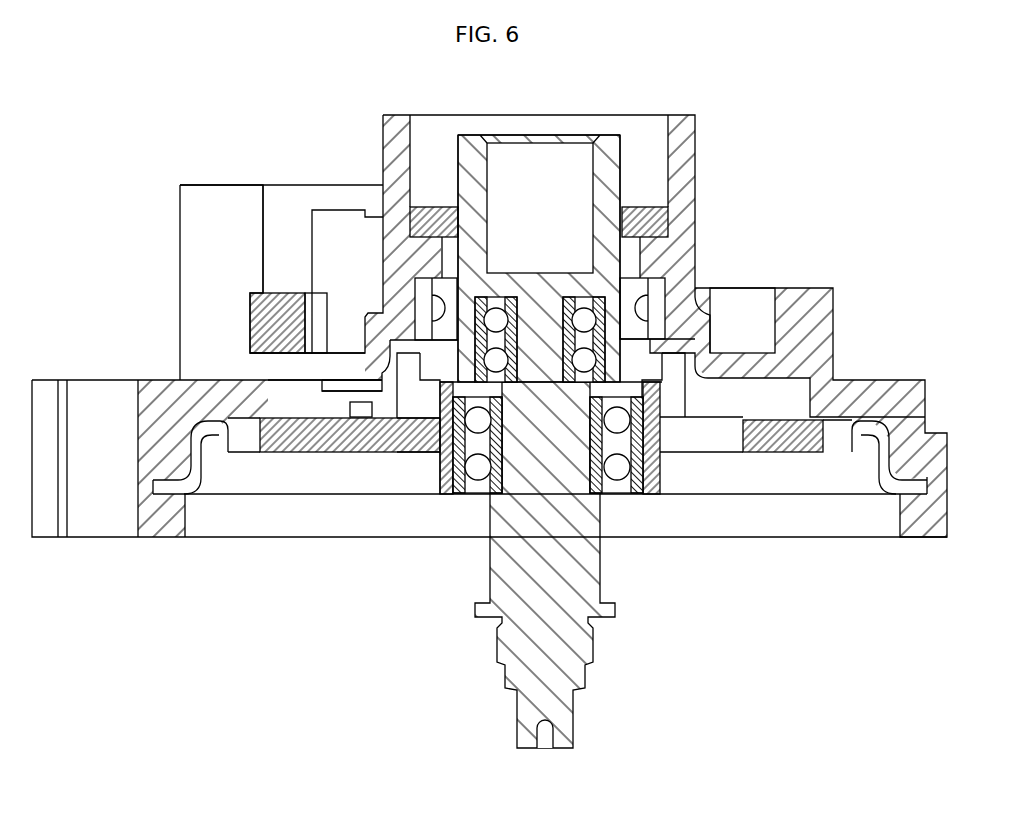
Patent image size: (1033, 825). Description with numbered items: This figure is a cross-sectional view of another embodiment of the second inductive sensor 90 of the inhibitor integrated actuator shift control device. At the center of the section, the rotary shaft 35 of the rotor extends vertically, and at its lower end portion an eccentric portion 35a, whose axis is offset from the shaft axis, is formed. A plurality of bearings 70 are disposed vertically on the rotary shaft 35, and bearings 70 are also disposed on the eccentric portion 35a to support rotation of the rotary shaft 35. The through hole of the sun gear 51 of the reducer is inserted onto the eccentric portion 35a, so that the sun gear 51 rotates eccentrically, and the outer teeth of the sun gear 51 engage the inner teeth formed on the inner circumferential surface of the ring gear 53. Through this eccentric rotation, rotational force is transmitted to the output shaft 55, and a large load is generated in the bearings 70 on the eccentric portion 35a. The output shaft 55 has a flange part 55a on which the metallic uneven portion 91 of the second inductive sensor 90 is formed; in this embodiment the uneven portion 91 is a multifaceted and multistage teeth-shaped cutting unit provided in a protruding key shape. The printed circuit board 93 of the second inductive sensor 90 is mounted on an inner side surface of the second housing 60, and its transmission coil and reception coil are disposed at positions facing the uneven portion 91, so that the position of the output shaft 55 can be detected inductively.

The rotary shaft 35 is at (632, 598).
The eccentric portion 35a is at (607, 470).
The sun gear 51 is at (285, 456).
The ring gear 53 is at (232, 462).
The output shaft 55 is at (604, 176).
The flange part 55a is at (375, 455).
The second housing 60 is at (862, 311).
The bearings 70 is at (605, 303).
The second inductive sensor 90 is at (87, 220).
The uneven portion 91 is at (350, 410).
The printed circuit board 93 is at (348, 380).